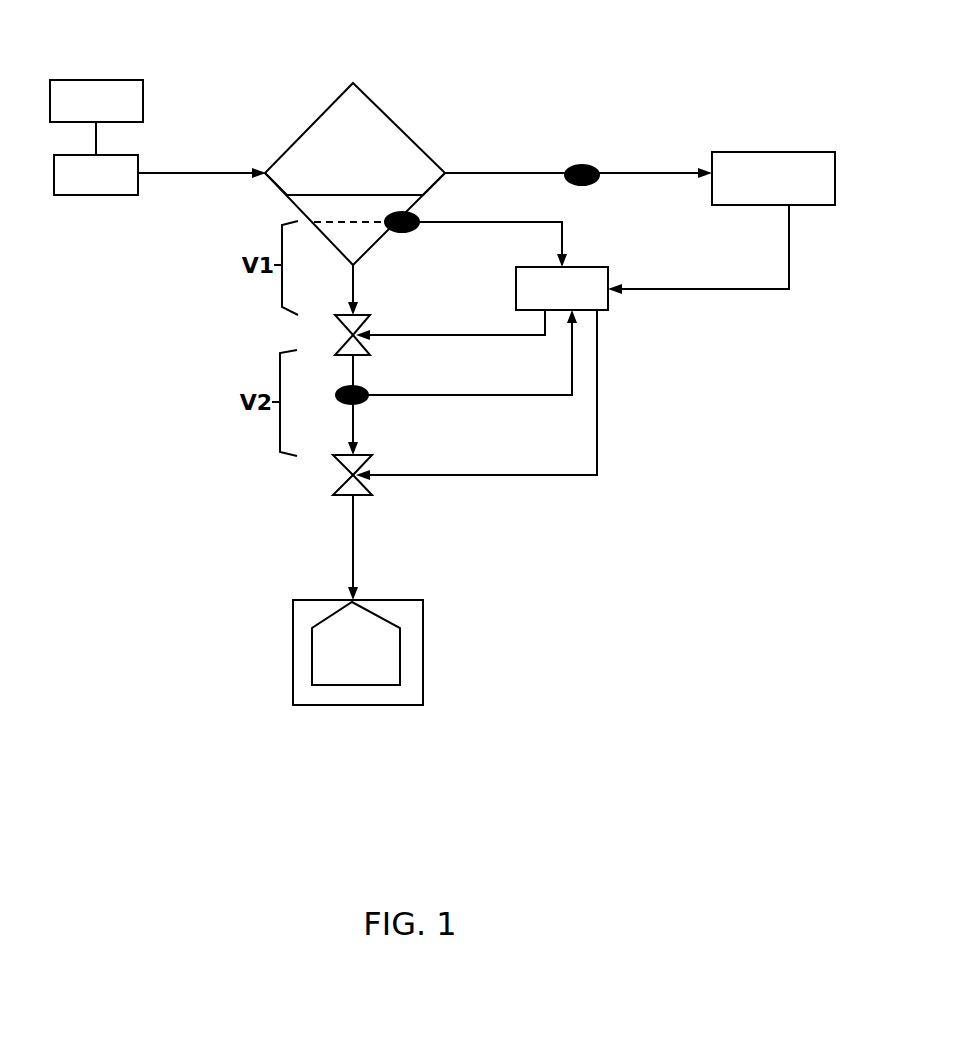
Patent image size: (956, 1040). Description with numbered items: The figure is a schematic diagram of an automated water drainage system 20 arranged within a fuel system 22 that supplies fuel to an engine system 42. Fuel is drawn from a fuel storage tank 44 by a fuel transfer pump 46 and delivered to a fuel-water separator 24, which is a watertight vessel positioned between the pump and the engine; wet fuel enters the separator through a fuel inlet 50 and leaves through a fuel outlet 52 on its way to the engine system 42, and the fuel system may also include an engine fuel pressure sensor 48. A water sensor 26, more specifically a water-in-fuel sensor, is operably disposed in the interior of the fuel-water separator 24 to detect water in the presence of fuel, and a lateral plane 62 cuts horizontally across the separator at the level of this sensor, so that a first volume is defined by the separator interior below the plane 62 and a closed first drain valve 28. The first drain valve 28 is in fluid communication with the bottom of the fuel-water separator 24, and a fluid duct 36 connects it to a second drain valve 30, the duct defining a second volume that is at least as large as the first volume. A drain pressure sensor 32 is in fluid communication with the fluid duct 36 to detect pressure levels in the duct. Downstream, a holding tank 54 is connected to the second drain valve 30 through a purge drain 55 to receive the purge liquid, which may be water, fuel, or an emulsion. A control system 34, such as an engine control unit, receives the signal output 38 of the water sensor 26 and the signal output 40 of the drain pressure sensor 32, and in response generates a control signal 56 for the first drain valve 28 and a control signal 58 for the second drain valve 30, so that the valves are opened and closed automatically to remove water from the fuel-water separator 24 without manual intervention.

The automated water drainage system 20 is at (566, 83).
The fuel system 22 is at (754, 65).
The fuel-water separator 24 is at (374, 100).
The water sensor 26 is at (405, 232).
The first drain valve 28 is at (366, 312).
The second drain valve 30 is at (366, 460).
The drain pressure sensor 32 is at (362, 390).
The control system 34 is at (562, 288).
The fluid duct 36 is at (350, 370).
The signal output 38 is at (488, 222).
The signal output 40 is at (446, 395).
The engine system 42 is at (773, 178).
The fuel storage tank 44 is at (96, 101).
The fuel transfer pump 46 is at (96, 175).
The engine fuel pressure sensor 48 is at (588, 166).
The fuel inlet 50 is at (264, 170).
The fuel outlet 52 is at (447, 172).
The holding tank 54 is at (424, 668).
The purge drain 55 is at (311, 670).
The control signal 56 is at (526, 335).
The control signal 58 is at (510, 475).
The lateral plane 62 is at (337, 222).